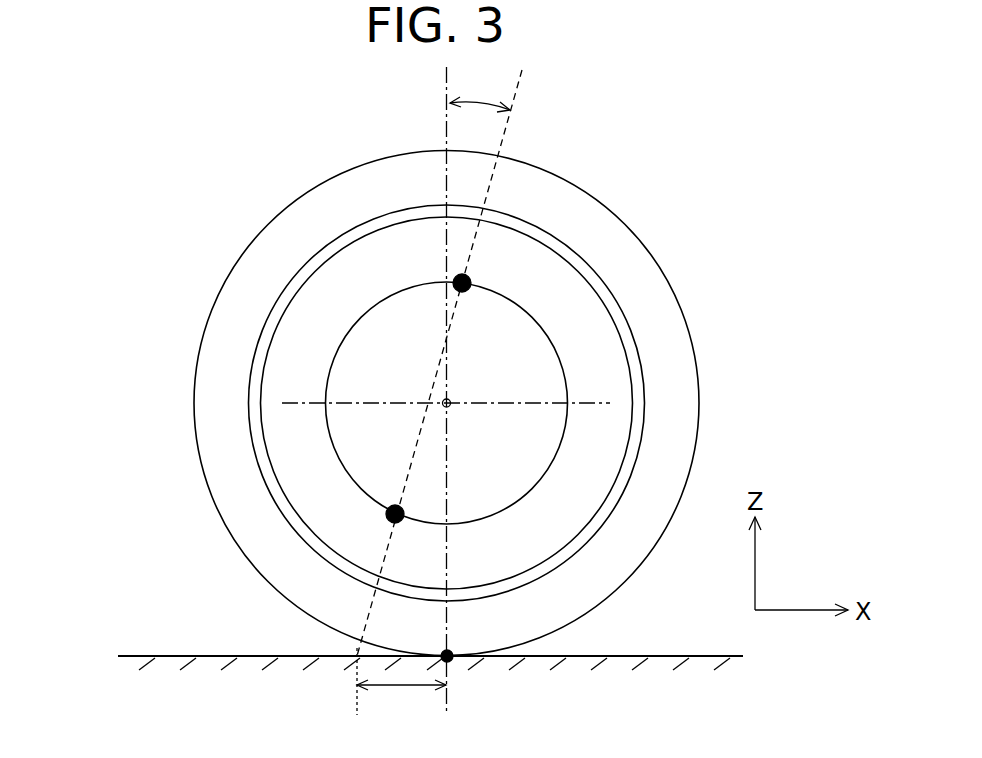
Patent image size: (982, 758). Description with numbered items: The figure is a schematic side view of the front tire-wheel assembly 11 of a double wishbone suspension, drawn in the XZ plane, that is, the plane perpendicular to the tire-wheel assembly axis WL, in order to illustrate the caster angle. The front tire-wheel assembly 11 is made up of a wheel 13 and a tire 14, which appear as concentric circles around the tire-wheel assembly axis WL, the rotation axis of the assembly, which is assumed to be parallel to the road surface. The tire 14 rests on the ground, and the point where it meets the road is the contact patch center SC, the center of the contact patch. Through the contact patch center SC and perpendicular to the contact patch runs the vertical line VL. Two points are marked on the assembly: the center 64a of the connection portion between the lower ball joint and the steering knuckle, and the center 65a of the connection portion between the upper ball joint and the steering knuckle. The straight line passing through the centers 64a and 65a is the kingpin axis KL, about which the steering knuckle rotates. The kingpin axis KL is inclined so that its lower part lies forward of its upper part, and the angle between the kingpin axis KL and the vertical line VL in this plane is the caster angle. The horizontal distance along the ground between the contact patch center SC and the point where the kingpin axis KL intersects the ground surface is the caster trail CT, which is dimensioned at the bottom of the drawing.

The front tire-wheel assembly 11 is at (380, 384).
The wheel 13 is at (312, 330).
The tire 14 is at (295, 218).
The center of the connection portion between the ball joint and the steering knuckle 64a is at (388, 515).
The center of the connection portion between the ball joint and the steering knuckle 65a is at (470, 284).
The vertical line VL is at (447, 132).
The kingpin axis KL is at (502, 148).
The tire-wheel assembly axis WL is at (452, 400).
The contact patch center SC is at (452, 664).
The caster trail CT is at (401, 701).